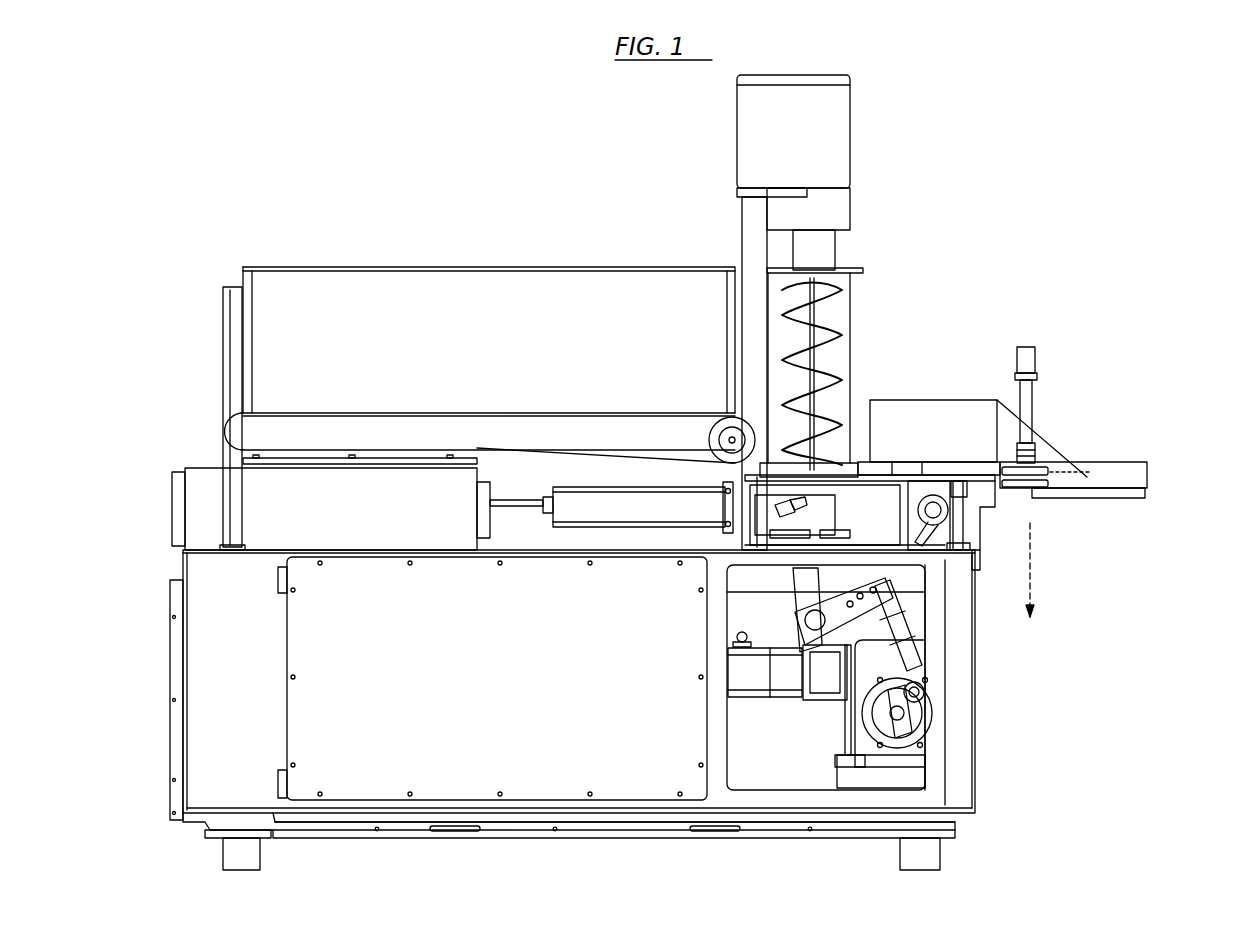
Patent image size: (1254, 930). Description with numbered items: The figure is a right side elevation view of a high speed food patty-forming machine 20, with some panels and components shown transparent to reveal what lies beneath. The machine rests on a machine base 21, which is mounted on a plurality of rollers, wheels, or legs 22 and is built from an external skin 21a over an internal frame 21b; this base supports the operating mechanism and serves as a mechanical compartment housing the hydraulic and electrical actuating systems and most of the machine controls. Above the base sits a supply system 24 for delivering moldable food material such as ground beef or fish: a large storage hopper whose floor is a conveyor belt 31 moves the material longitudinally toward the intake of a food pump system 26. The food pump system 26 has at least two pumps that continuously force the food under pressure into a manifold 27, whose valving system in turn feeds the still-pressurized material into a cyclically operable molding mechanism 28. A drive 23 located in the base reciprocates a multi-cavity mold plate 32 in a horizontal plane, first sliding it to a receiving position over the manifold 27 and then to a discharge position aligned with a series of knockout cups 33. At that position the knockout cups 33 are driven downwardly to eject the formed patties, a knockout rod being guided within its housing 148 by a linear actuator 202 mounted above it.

The food patty-forming machine 20 is at (983, 178).
The machine base 21 is at (978, 712).
The external skin 21a is at (955, 655).
The internal frame 21b is at (750, 590).
The legs 22 is at (940, 858).
The drive 23 is at (920, 745).
The supply system 24 is at (718, 243).
The food pump system 26 is at (580, 530).
The manifold 27 is at (985, 481).
The molding mechanism 28 is at (1007, 493).
The conveyor belt 31 is at (480, 412).
The mold plate 32 is at (1090, 478).
The knockout cups 33 is at (1045, 467).
The knockout housing 148 is at (1034, 395).
The linear actuator 202 is at (1016, 350).